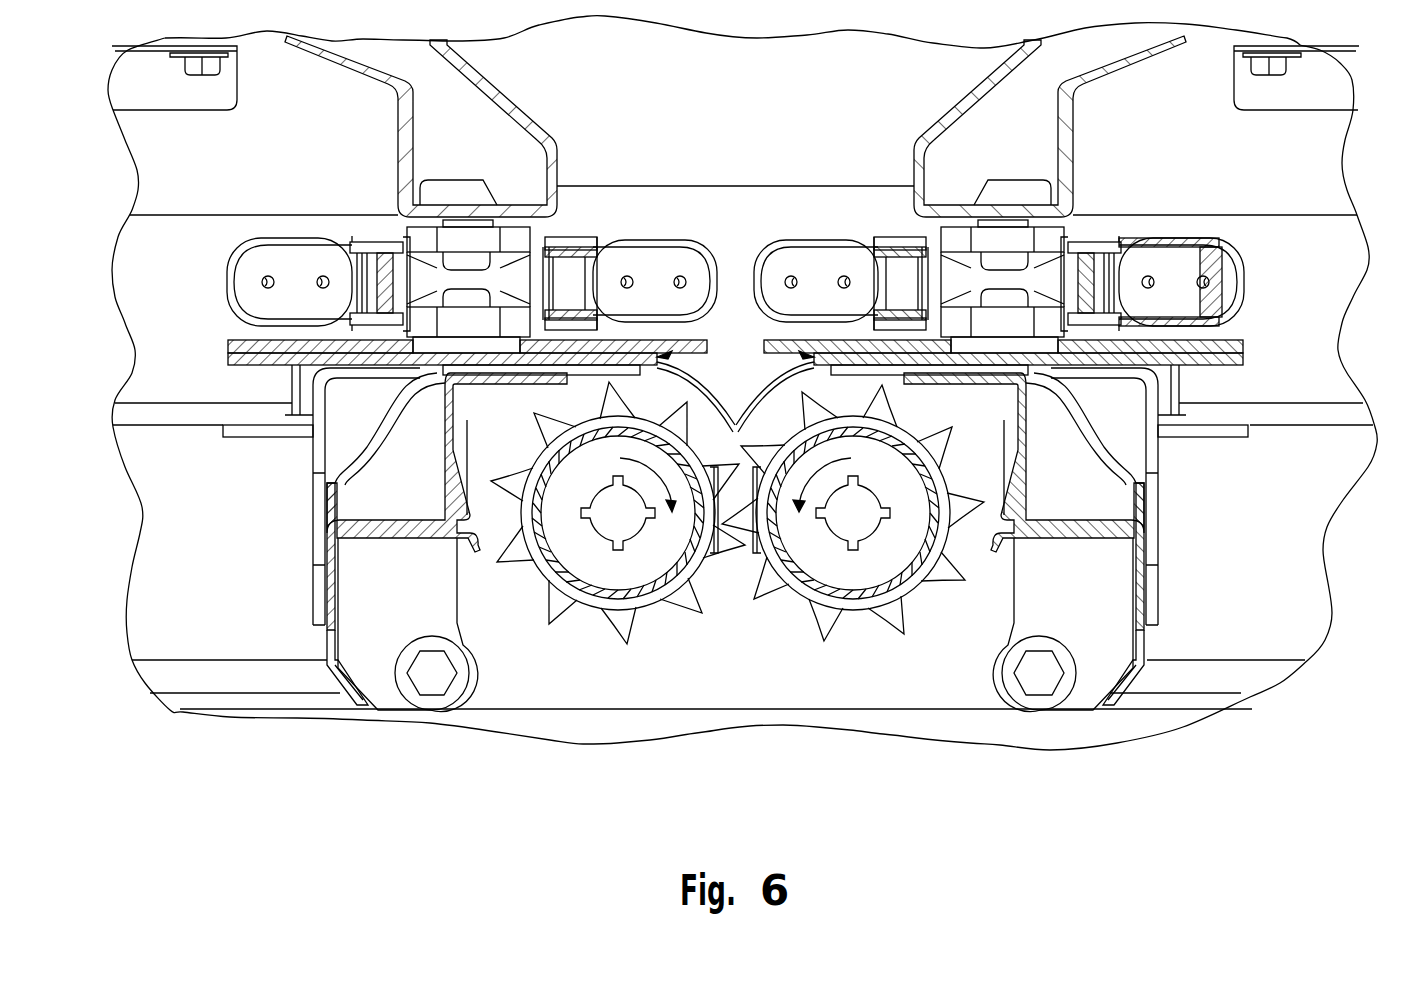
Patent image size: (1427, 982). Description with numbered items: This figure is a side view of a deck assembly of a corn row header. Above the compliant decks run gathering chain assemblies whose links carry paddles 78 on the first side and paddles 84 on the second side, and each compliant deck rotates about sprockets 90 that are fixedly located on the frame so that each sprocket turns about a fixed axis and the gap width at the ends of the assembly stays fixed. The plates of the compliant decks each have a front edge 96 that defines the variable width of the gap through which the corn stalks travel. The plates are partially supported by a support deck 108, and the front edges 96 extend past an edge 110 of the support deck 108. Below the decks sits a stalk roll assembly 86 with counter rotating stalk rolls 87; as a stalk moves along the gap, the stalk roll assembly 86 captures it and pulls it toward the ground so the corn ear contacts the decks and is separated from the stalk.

The paddles 78 is at (657, 258).
The paddles 84 is at (813, 262).
The sprockets 90 is at (430, 270).
The front edge 96 is at (752, 334).
The support deck 108 is at (412, 357).
The stalk roll assembly 86 is at (708, 654).
The stalk rolls 87 is at (600, 622).
The edge of the support deck 110 is at (738, 443).